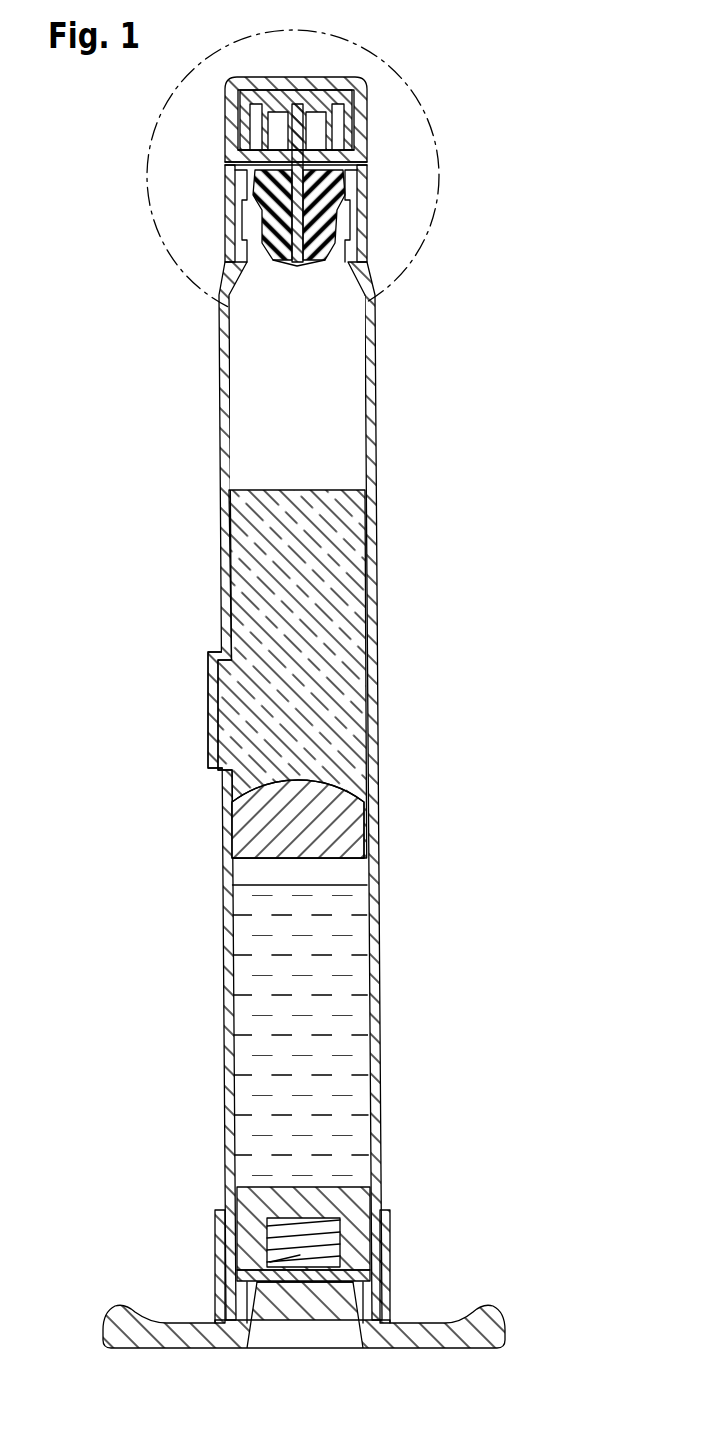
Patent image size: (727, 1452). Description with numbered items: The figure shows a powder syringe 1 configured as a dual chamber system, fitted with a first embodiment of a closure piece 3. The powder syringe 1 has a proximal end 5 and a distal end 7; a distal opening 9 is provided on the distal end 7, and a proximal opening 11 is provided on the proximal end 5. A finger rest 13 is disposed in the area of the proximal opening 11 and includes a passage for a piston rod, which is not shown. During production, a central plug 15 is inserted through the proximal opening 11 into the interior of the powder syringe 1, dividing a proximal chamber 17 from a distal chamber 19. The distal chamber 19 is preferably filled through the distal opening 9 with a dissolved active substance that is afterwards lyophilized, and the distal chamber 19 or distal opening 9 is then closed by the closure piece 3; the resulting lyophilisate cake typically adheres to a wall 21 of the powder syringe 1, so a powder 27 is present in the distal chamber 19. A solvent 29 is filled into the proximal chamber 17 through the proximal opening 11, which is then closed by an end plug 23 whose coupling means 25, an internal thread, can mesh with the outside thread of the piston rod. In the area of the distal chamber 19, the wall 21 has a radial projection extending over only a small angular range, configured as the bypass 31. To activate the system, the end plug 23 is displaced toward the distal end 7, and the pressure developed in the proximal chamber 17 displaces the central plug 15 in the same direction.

The powder syringe 1 is at (478, 348).
The closure piece 3 is at (428, 64).
The proximal end 5 is at (392, 1250).
The distal end 7 is at (355, 228).
The distal opening 9 is at (346, 183).
The proximal opening 11 is at (306, 1300).
The finger rest 13 is at (495, 1325).
The central plug 15 is at (357, 803).
The proximal chamber 17 is at (350, 878).
The distal chamber 19 is at (348, 462).
The wall 21 is at (373, 575).
The end plug 23 is at (357, 1194).
The coupling means 25 is at (286, 1260).
The powder 27 is at (348, 688).
The solvent 29 is at (350, 1000).
The bypass 31 is at (213, 697).